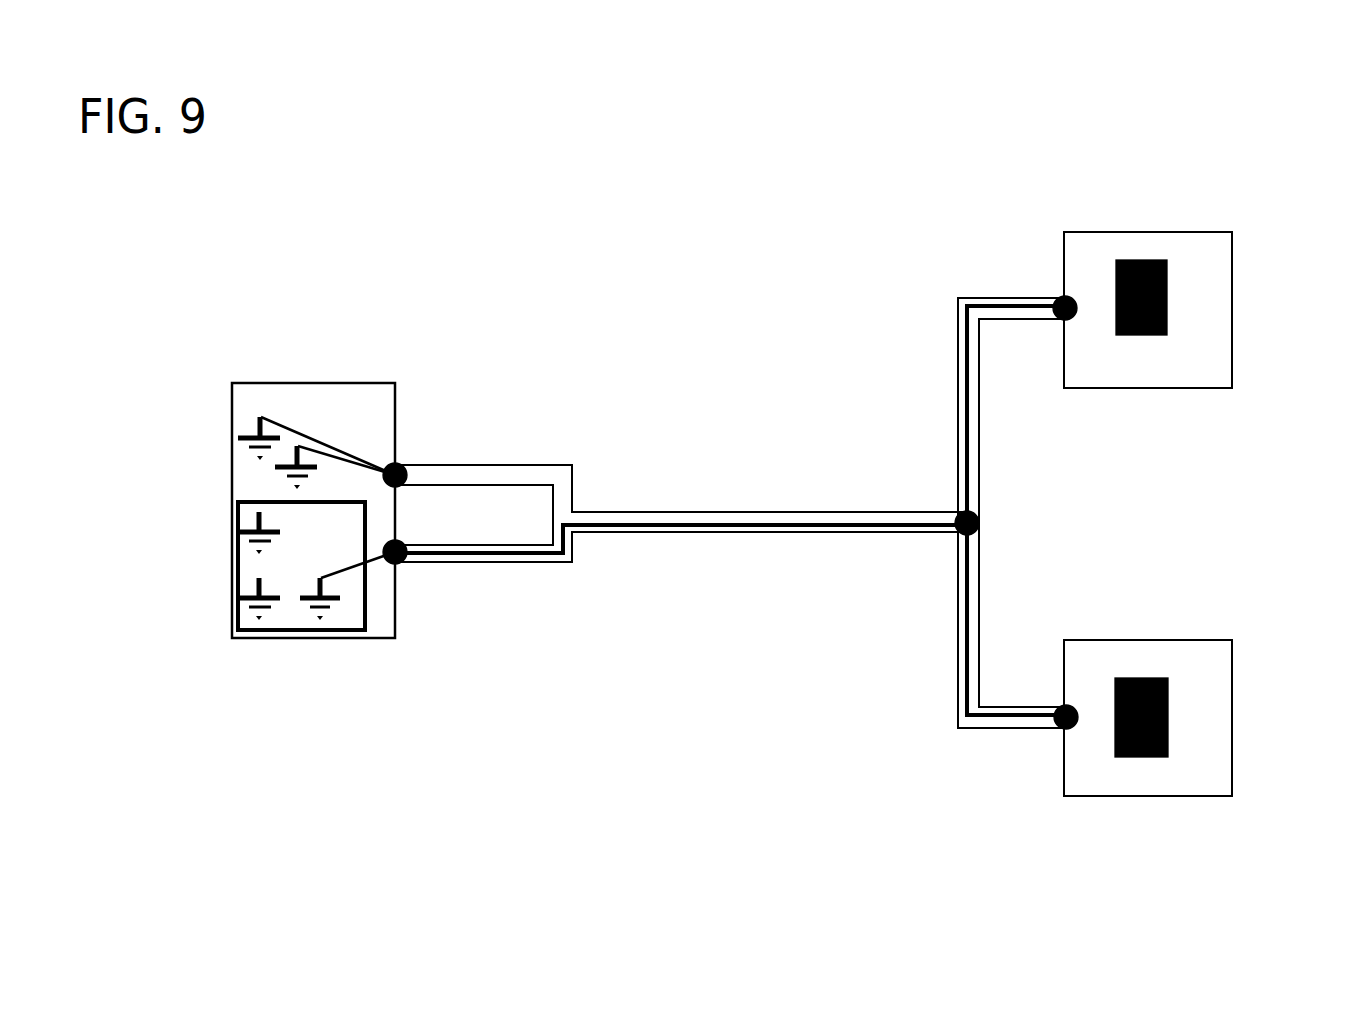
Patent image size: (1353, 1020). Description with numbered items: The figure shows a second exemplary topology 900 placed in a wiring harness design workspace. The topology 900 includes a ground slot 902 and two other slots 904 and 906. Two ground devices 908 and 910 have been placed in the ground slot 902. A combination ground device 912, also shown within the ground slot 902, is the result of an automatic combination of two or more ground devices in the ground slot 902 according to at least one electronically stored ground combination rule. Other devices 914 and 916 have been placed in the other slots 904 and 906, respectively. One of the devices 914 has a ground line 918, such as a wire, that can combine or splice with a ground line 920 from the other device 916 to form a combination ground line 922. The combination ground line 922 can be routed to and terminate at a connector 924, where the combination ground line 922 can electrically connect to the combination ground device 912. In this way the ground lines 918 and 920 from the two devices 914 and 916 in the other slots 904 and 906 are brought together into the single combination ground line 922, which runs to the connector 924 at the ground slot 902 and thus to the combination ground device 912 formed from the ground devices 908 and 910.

The topology 900 is at (380, 313).
The ground slot 902 is at (285, 397).
The other slot 904 is at (1193, 250).
The other slot 906 is at (1197, 653).
The ground device 908 is at (252, 448).
The ground device 910 is at (287, 478).
The combination ground device 912 is at (250, 563).
The device 914 is at (1167, 303).
The device 916 is at (1167, 713).
The ground line 918 is at (967, 452).
The ground line 920 is at (968, 607).
The combination ground line 922 is at (793, 528).
The connector 924 is at (398, 560).